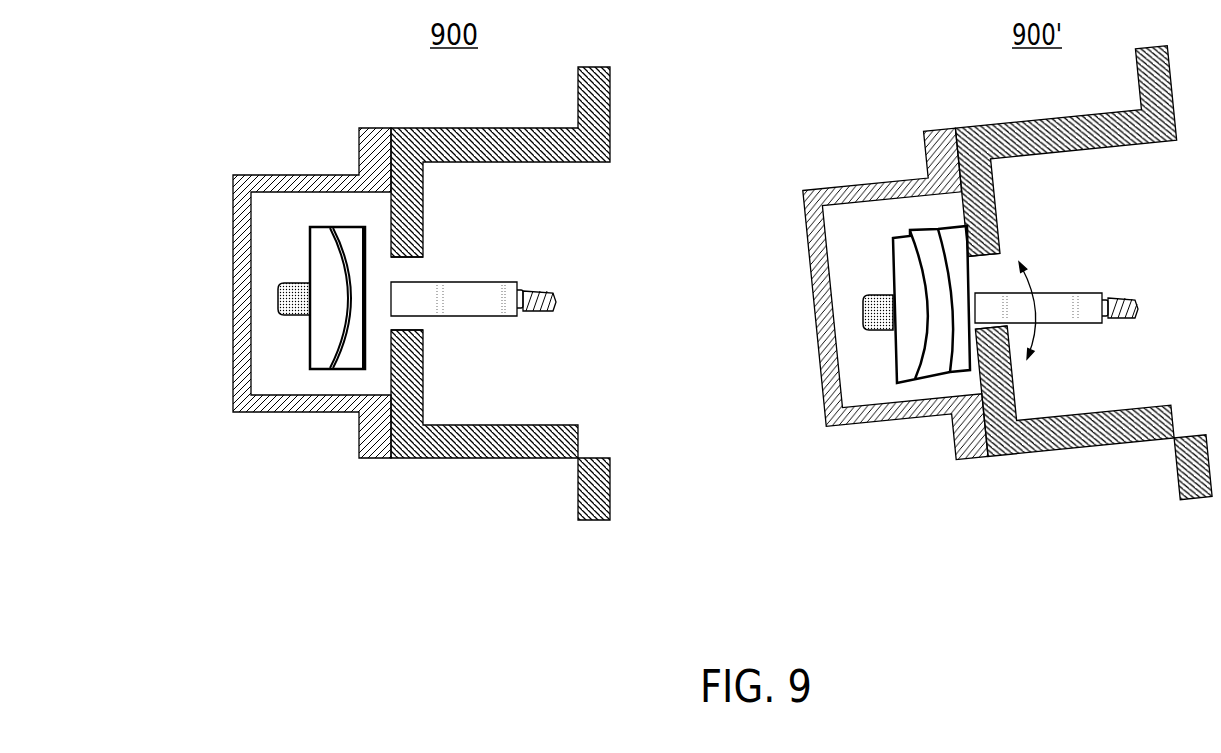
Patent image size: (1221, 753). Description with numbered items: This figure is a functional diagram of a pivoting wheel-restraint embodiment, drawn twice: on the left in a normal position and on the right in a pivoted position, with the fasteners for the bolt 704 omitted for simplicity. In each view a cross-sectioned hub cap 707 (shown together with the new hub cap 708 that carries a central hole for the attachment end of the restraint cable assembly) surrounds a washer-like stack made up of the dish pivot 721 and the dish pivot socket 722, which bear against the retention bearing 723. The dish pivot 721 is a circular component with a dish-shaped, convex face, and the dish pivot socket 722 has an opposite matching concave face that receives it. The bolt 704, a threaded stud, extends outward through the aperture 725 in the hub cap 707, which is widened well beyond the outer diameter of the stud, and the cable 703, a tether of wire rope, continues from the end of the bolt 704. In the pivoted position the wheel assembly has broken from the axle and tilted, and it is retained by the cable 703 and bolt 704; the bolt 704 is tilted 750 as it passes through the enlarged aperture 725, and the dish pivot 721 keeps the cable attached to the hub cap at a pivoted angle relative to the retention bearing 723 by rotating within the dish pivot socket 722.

The cable 703 is at (541, 327).
The bolt 704 is at (457, 320).
The hub cap 707 is at (448, 463).
The hub cap 708 is at (356, 443).
The dish pivot 721 is at (313, 227).
The dish pivot socket 722 is at (350, 227).
The retention bearing 723 is at (358, 358).
The aperture 725 is at (402, 268).
The tilt 750 is at (1044, 330).